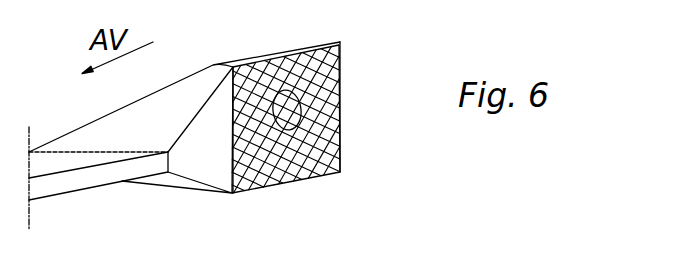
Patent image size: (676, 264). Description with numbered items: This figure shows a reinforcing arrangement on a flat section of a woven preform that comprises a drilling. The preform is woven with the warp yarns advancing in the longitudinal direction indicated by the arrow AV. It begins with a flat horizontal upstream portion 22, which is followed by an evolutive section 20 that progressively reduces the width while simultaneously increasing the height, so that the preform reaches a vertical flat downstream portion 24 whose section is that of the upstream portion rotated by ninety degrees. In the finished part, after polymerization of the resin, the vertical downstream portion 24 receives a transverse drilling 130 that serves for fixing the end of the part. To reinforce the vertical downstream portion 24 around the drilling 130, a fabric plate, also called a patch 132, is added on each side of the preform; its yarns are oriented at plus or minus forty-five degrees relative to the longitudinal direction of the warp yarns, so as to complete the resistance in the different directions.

The evolutive section 20 is at (163, 184).
The flat horizontal upstream portion 22 is at (50, 197).
The vertical flat downstream portion 24 is at (295, 183).
The transverse drilling 130 is at (284, 107).
The fabric plate (patch) 132 is at (334, 146).